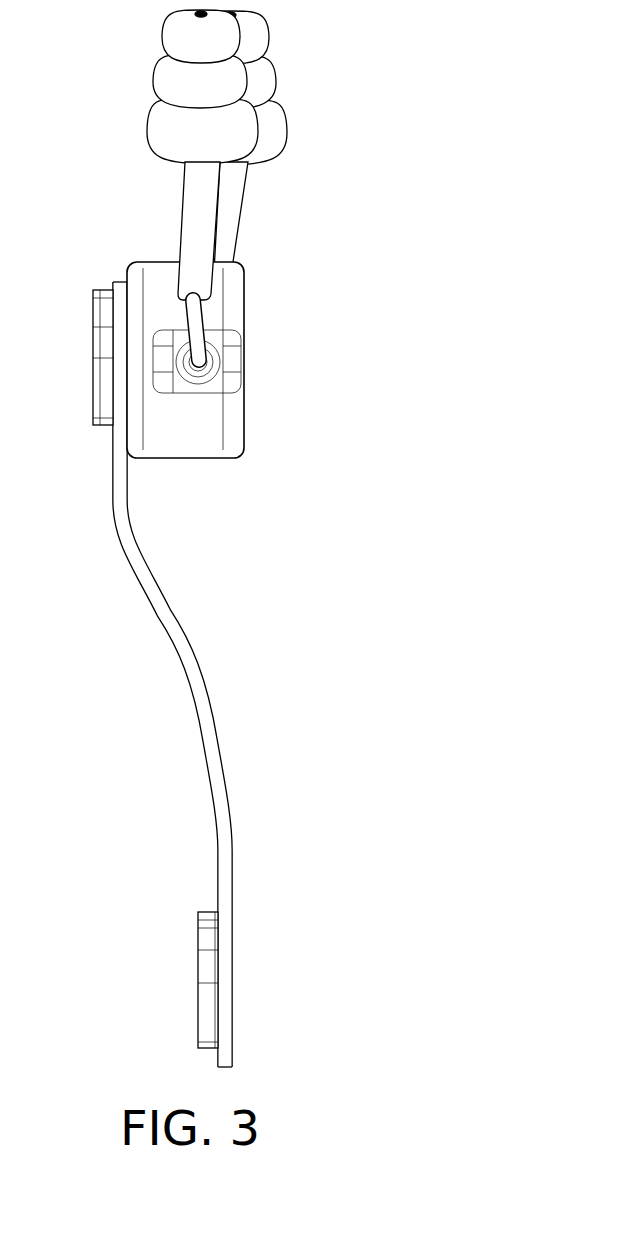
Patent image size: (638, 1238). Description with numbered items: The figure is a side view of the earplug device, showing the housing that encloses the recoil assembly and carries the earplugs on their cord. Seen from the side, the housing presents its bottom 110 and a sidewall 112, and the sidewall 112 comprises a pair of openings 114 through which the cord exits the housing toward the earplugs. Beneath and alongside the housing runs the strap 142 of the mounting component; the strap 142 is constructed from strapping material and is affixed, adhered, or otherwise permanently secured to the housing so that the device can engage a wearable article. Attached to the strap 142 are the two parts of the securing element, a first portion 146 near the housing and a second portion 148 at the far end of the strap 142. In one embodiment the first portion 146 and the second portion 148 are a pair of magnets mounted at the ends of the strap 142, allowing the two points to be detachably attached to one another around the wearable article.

The bottom 110 is at (260, 360).
The sidewall 112 is at (205, 447).
The openings 114 is at (203, 357).
The strap 142 is at (214, 697).
The first portion 146 is at (93, 355).
The second portion 148 is at (198, 980).